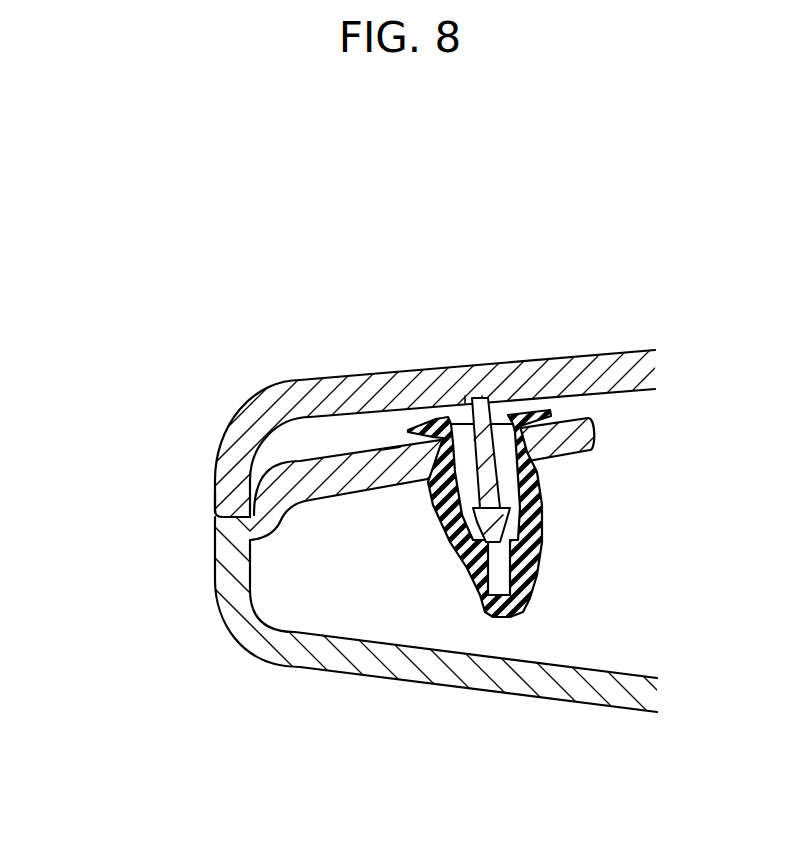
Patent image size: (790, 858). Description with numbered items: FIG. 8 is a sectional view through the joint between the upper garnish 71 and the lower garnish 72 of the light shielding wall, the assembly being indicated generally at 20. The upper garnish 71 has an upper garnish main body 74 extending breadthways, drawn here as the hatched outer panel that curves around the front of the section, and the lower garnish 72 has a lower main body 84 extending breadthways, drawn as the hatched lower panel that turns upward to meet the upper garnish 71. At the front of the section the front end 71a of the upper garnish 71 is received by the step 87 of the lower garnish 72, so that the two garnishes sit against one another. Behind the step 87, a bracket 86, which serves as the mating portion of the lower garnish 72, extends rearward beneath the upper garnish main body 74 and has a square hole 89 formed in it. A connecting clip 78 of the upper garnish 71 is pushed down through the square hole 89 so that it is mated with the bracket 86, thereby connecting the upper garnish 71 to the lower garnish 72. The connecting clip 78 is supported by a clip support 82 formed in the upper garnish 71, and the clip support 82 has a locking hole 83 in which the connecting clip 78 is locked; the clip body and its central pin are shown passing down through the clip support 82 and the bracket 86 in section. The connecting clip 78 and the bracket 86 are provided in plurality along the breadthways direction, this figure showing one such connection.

The mounting structure 20 is at (155, 168).
The upper garnish 71 is at (395, 429).
The front end 71a is at (238, 497).
The lower garnish 72 is at (395, 429).
The upper garnish main body 74 is at (293, 392).
The connecting clip 78 is at (392, 452).
The clip support 82 is at (395, 429).
The locking hole 83 is at (500, 525).
The lower main body 84 is at (447, 683).
The bracket 86 is at (347, 460).
The step 87 is at (215, 500).
The square hole 89 is at (489, 398).